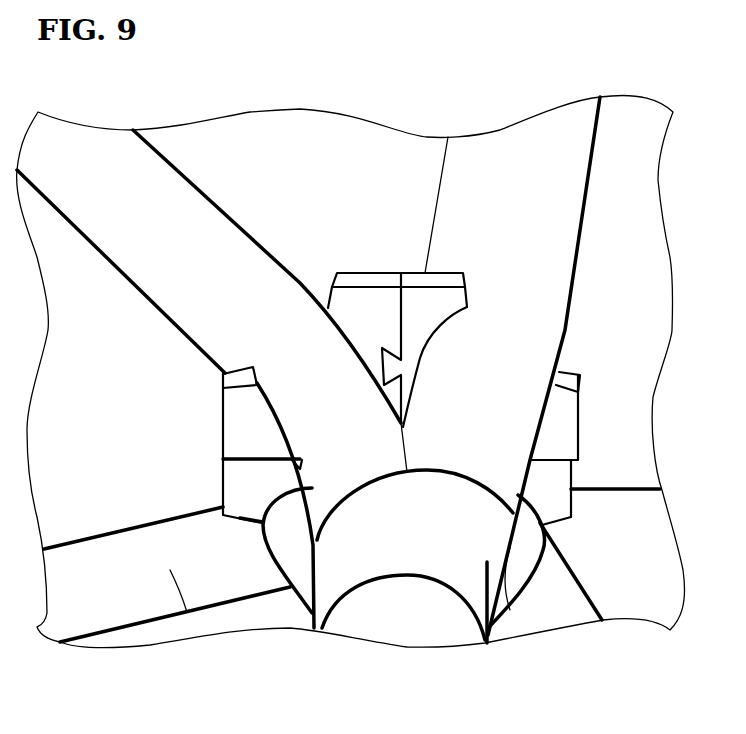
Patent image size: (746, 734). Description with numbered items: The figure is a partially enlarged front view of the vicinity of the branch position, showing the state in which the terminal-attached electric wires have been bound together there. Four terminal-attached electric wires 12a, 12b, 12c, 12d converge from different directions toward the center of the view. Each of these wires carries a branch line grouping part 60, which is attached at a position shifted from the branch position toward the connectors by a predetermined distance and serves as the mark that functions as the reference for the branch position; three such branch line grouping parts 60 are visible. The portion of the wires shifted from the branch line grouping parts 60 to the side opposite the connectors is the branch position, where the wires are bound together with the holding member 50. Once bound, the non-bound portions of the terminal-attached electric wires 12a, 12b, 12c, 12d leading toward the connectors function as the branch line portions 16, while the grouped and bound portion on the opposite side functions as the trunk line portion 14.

The terminal-attached electric wire 12a is at (148, 268).
The terminal-attached electric wire 12b is at (562, 207).
The terminal-attached electric wire 12c is at (117, 552).
The terminal-attached electric wire 12d is at (565, 590).
The branch line portion 16 is at (348, 369).
The branch line grouping part 60 is at (357, 272).
The holding member 50 is at (333, 558).
The trunk line portion 14 is at (437, 635).